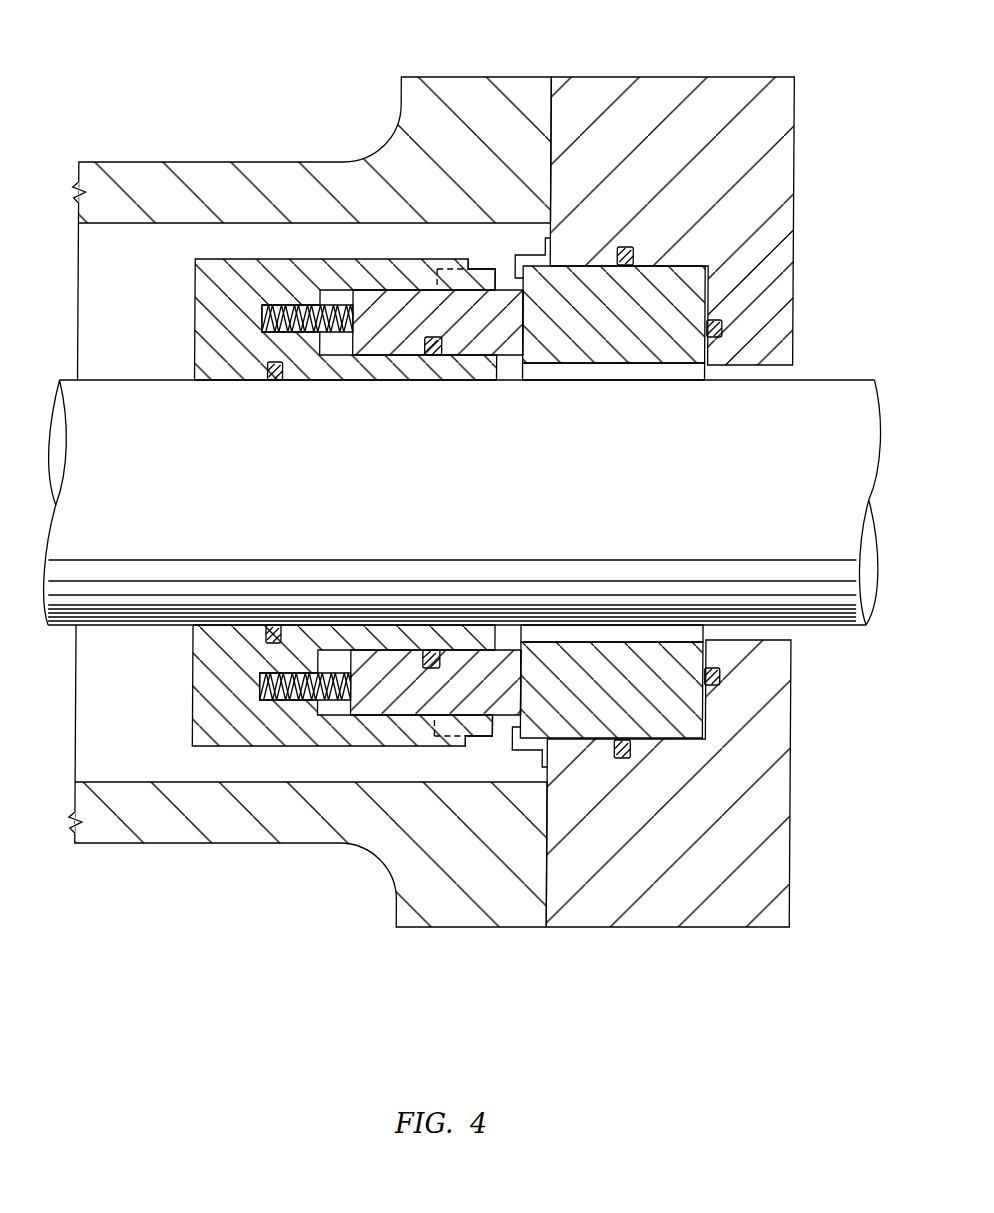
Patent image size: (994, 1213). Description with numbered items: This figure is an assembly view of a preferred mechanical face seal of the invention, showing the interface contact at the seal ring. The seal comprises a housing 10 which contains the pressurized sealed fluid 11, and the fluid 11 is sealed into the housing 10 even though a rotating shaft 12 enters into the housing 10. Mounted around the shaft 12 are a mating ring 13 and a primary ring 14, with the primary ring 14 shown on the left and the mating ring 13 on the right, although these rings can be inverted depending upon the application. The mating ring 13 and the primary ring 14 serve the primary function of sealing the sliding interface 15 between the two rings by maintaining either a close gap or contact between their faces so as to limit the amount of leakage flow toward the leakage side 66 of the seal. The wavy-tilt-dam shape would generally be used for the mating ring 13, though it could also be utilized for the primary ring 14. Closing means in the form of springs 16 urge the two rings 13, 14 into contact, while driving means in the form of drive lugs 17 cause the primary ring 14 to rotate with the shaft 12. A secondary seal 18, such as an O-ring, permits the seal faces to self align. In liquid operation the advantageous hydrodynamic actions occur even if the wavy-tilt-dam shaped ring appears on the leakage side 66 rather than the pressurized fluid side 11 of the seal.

The housing 10 is at (483, 115).
The sealed fluid 11 is at (128, 288).
The rotating shaft 12 is at (461, 502).
The mating ring 13 is at (690, 308).
The primary ring 14 is at (413, 320).
The sliding interface 15 is at (523, 300).
The spring 16 is at (292, 305).
The drive lug 17 is at (478, 732).
The secondary seal 18 is at (370, 717).
The leakage side 66 is at (587, 373).